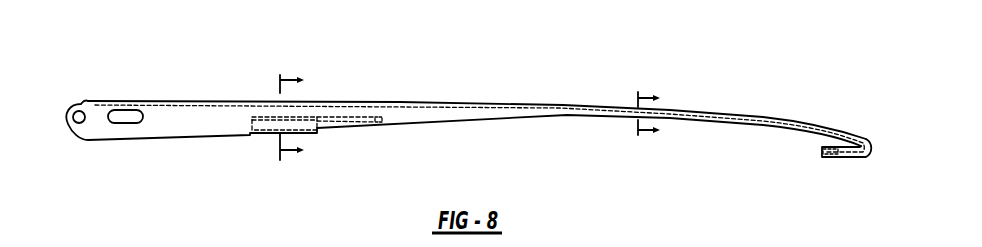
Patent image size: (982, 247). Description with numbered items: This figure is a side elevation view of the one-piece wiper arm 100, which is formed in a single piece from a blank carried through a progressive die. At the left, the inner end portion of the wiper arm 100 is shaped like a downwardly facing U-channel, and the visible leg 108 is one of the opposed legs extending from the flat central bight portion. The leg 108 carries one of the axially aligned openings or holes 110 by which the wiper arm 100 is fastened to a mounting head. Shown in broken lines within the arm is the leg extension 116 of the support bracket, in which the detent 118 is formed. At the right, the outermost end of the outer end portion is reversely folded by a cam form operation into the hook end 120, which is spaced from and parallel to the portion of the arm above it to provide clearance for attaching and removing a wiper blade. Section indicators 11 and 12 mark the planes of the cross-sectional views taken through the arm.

The one-piece wiper arm 100 is at (583, 65).
The leg 108 is at (177, 120).
The openings or holes 110 is at (83, 122).
The leg extension 116 is at (358, 120).
The detent 118 is at (365, 117).
The hook end 120 is at (843, 157).
The section line 12- 12 is at (304, 115).
The section line 11- 11 is at (662, 115).